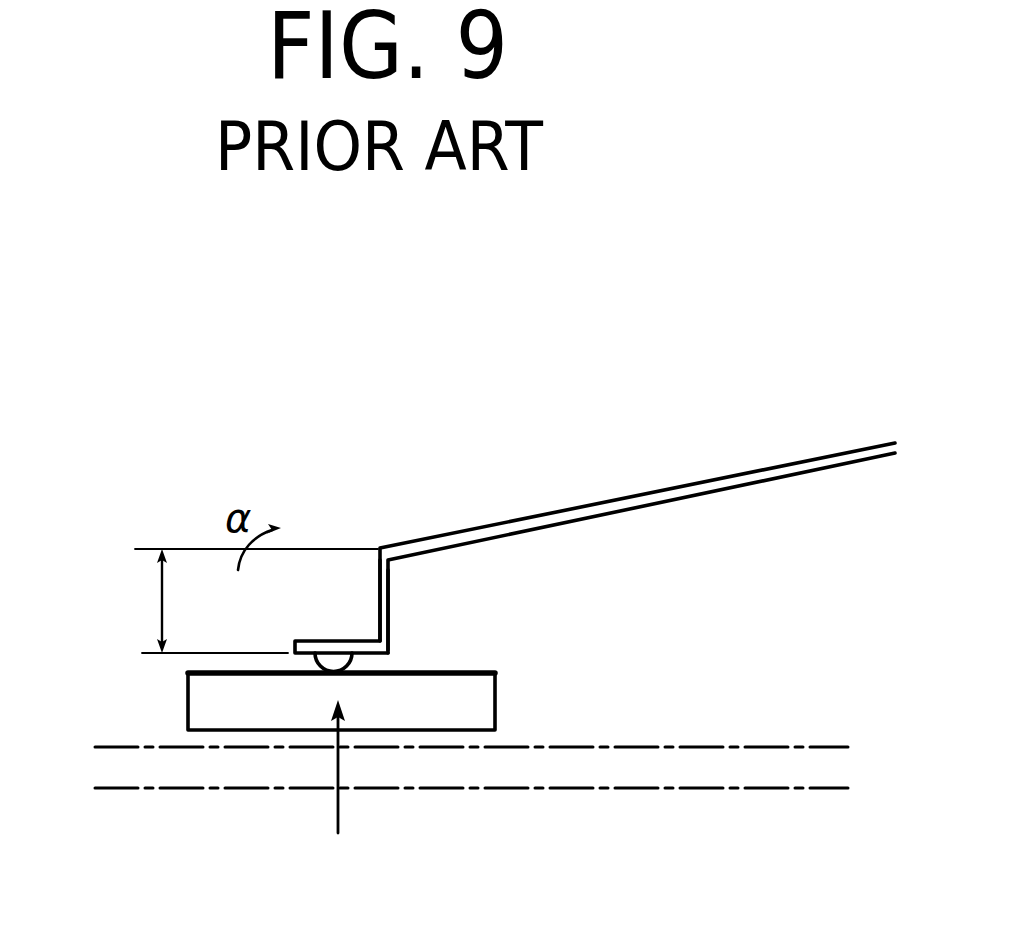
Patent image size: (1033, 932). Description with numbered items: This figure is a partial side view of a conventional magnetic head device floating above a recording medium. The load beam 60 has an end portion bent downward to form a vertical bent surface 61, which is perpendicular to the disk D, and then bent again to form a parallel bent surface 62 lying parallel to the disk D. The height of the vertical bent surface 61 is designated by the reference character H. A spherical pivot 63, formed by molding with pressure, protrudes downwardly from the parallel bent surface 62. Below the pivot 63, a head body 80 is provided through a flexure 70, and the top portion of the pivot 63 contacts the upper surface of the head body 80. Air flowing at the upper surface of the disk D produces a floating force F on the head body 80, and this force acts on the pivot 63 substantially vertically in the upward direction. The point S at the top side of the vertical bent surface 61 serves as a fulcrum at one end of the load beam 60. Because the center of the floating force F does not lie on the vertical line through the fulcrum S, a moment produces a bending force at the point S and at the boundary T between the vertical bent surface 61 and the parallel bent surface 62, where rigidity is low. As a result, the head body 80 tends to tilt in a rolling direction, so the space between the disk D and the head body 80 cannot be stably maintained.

The load beam 60 is at (682, 480).
The vertical bent surface 61 is at (390, 612).
The parallel bent surface 62 is at (315, 640).
The spherical pivot 63 is at (343, 673).
The flexure 70 is at (190, 668).
The head body 80 is at (223, 713).
The disk D is at (755, 747).
The fulcrum point S is at (378, 548).
The boundary T is at (388, 653).
The height of the vertical bent surface H is at (253, 601).
The floating force F is at (338, 794).